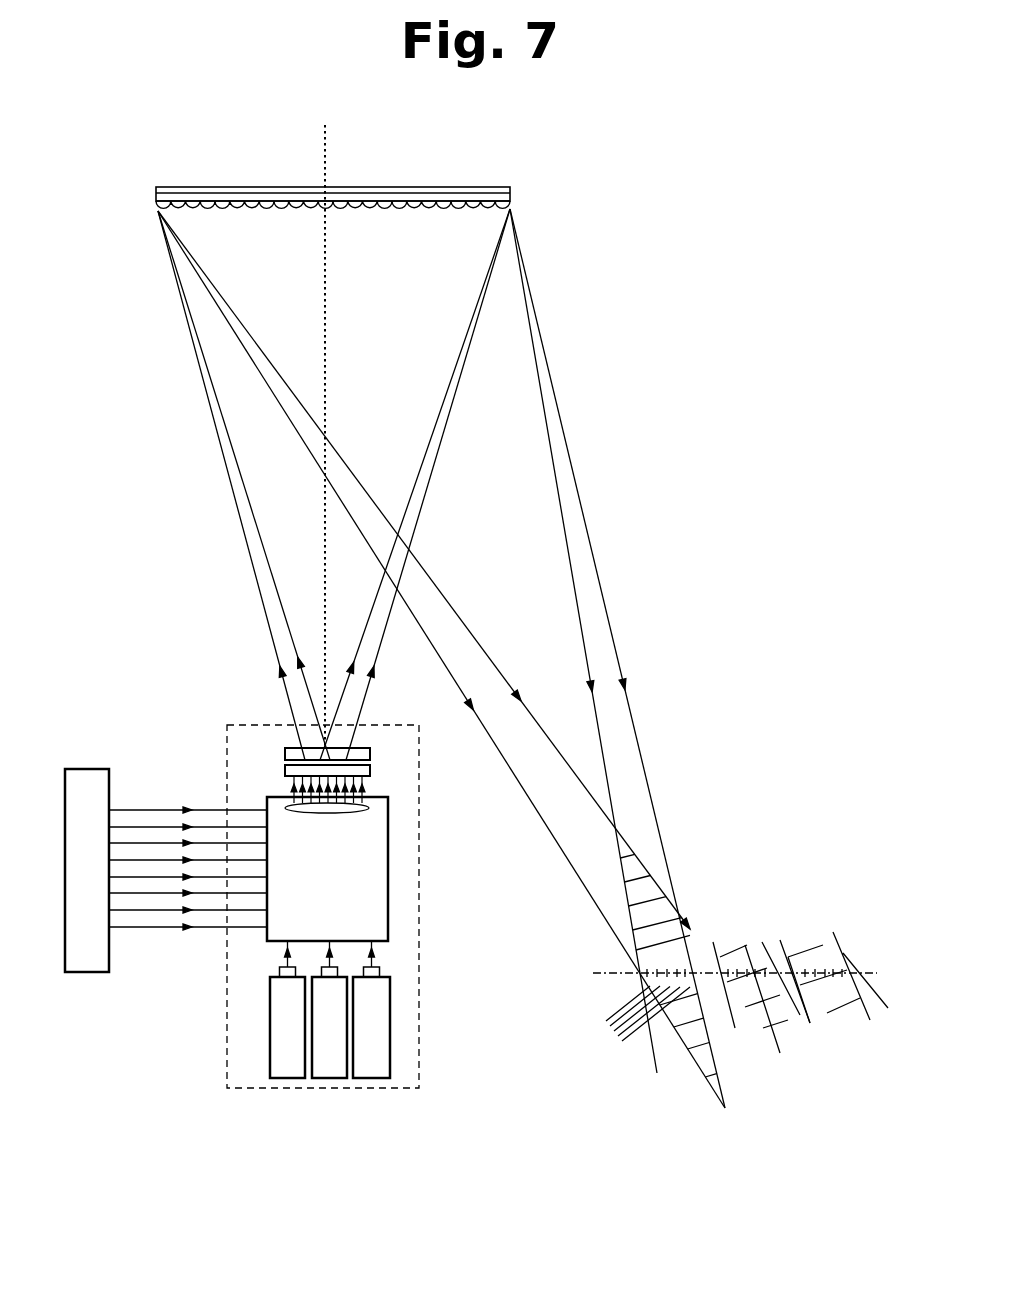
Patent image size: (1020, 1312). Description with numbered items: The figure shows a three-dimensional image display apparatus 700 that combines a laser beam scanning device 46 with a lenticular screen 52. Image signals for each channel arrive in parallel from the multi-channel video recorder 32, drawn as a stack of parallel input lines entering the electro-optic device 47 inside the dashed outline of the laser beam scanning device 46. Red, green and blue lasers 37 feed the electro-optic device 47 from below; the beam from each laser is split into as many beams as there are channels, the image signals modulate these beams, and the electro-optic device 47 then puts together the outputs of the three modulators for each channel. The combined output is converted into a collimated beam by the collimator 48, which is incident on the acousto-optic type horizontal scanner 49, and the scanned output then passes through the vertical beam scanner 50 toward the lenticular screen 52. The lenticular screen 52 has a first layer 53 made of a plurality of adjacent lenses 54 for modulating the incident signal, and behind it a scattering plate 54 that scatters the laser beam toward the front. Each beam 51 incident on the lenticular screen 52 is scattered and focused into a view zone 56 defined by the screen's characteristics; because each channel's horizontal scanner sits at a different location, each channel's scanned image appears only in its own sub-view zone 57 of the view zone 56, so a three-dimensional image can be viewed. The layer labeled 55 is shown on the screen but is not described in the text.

The multi-channel video recorder 32 is at (82, 972).
The red, green and blue lasers 37 is at (370, 1078).
The laser beam scanning device 46 is at (420, 860).
The electro-optic device 47 is at (390, 910).
The collimator 48 is at (370, 803).
The acousto-optic type horizontal scanner 49 is at (285, 772).
The vertical beam scanner 50 is at (285, 752).
The beam 51 is at (375, 594).
The lenticular screen 52 is at (522, 187).
The first layer 53 is at (511, 201).
The lenses / scattering plate 54 is at (182, 208).
The screen top layer 55 is at (180, 192).
The view zone 56 is at (807, 930).
The sub-view zone 57 is at (638, 1022).
The apparatus 700 is at (758, 514).